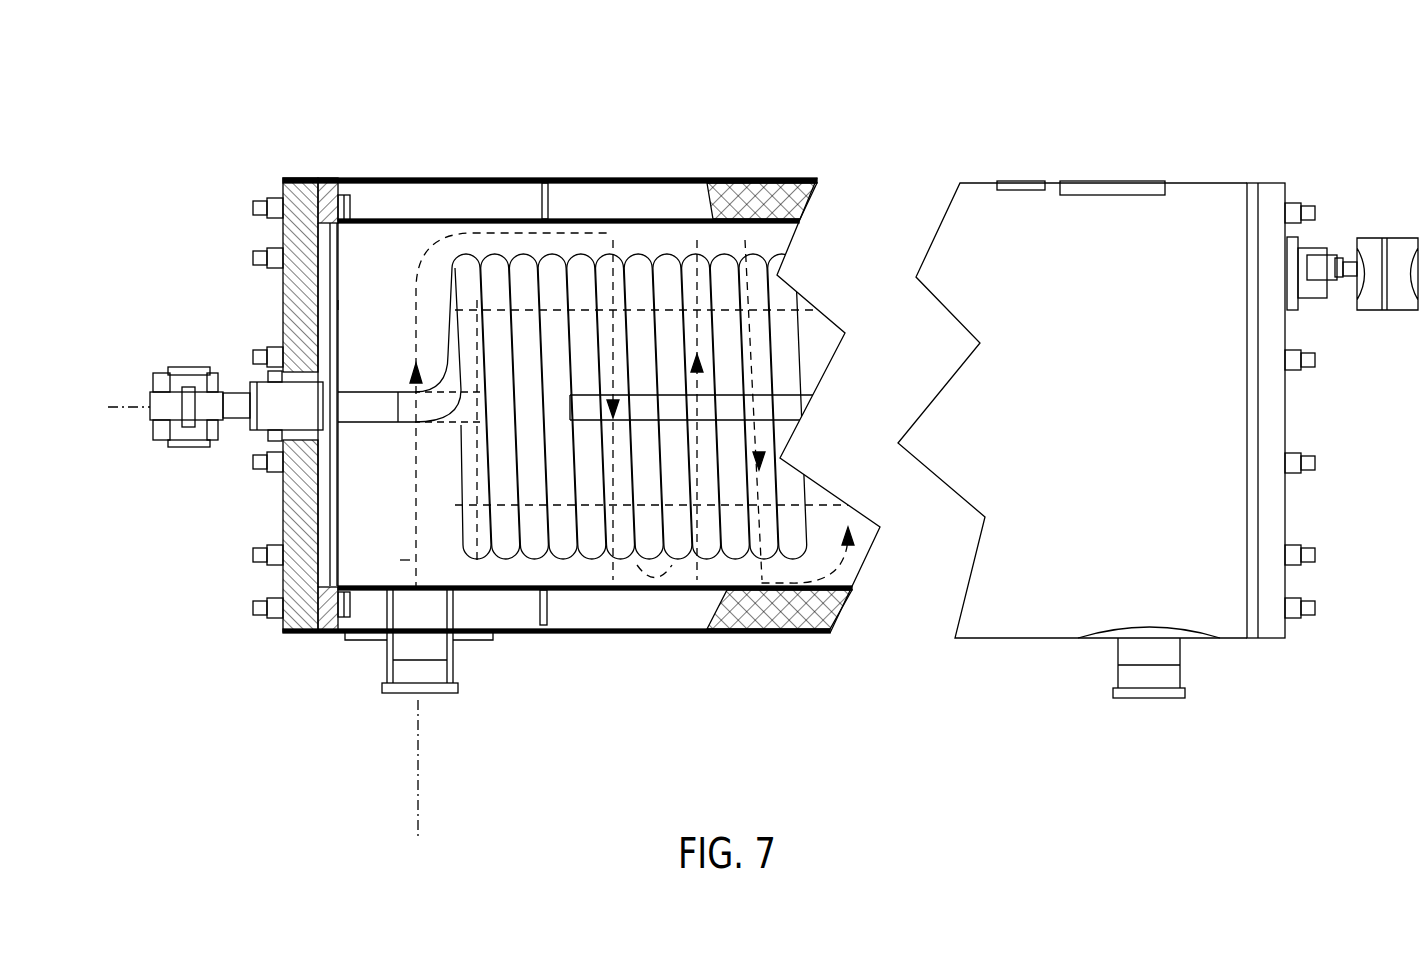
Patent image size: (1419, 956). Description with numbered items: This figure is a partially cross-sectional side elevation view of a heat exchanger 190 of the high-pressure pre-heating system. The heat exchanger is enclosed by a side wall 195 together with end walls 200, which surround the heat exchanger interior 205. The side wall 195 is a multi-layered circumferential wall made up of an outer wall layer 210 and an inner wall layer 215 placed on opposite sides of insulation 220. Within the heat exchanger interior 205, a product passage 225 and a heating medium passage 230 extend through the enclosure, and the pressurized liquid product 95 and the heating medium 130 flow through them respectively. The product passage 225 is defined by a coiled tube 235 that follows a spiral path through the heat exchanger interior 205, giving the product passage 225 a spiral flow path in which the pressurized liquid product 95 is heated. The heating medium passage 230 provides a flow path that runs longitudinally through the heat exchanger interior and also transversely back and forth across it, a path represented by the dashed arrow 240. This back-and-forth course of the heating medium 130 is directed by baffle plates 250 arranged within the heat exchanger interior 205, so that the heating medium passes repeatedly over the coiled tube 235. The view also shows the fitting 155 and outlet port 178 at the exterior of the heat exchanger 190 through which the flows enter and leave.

The pressurized liquid product 95 is at (136, 404).
The heating medium 130 is at (418, 783).
The fitting 155 is at (186, 441).
The outlet port 178 is at (467, 677).
The heat exchanger 190 is at (812, 163).
The side wall 195 is at (516, 171).
The end walls 200 is at (292, 292).
The heat exchanger interior 205 is at (360, 270).
The outer wall layer 210 is at (394, 178).
The inner wall layer 215 is at (386, 243).
The insulation 220 is at (742, 178).
The product passage 225 is at (373, 432).
The heating medium passage 230 is at (369, 556).
The coiled tube 235 is at (557, 575).
The dashed arrow 240 is at (416, 455).
The baffle plates 250 is at (648, 245).